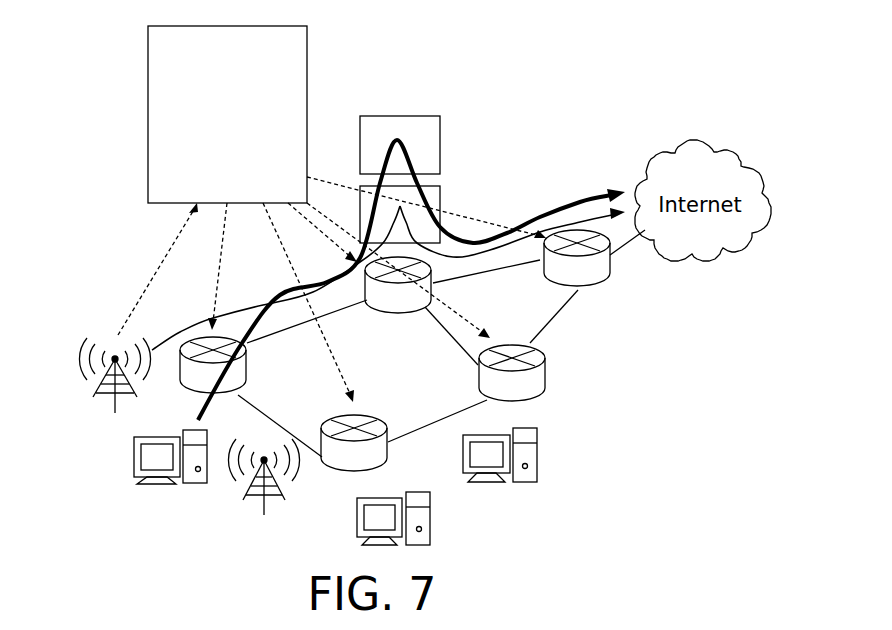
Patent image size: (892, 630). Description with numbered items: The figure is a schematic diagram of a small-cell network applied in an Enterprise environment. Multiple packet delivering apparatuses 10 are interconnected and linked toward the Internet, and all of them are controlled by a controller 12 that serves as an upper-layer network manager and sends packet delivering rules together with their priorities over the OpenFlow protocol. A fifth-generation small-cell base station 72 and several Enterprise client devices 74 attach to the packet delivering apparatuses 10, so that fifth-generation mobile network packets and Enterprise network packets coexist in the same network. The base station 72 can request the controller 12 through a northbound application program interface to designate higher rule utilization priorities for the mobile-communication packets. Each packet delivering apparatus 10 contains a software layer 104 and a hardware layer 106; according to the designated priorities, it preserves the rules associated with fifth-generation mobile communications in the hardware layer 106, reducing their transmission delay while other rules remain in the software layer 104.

The packet delivering apparatus 10 is at (246, 366).
The controller 12 is at (148, 115).
The 5G small-cell base station 72 is at (93, 388).
The Enterprise client device 74 is at (134, 453).
The software layer 104 is at (440, 141).
The hardware layer 106 is at (440, 200).